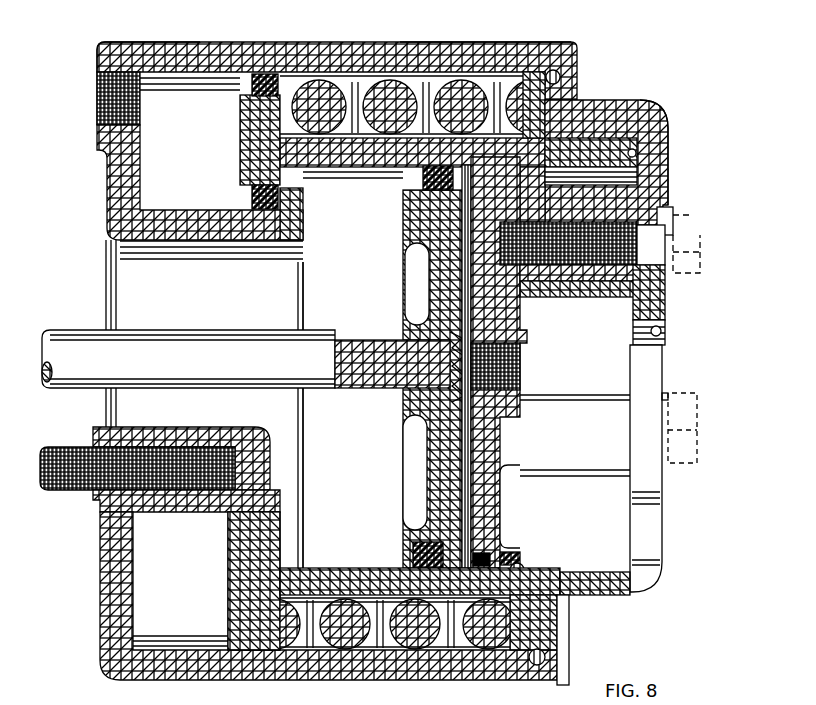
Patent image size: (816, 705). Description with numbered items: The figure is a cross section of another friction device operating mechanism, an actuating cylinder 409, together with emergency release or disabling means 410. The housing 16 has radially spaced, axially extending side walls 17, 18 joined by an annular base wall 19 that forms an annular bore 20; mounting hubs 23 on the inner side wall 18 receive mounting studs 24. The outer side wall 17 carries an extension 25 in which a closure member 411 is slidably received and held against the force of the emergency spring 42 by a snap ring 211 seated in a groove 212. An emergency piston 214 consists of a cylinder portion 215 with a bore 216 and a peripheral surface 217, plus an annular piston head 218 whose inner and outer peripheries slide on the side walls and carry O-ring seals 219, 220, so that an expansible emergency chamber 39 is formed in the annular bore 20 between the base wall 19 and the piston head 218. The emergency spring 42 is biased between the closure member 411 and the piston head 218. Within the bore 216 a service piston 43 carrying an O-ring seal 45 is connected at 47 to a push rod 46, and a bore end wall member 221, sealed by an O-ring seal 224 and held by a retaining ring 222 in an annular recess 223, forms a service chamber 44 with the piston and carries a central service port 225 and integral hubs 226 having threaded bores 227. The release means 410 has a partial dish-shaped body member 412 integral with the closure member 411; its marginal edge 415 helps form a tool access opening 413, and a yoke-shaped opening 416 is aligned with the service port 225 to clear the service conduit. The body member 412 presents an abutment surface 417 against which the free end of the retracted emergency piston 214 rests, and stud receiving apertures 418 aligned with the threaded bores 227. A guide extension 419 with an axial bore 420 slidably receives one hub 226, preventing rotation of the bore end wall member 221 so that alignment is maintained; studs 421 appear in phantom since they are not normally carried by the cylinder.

The actuating cylinder 409 is at (95, 40).
The housing 16 is at (139, 44).
The side wall 17 is at (190, 52).
The side wall extension 25 is at (486, 60).
The closure member 411 is at (536, 74).
The body member 412 is at (612, 102).
The emergency release means 410 is at (725, 100).
The abutment surface 417 is at (636, 152).
The stud receiving apertures 418 is at (678, 222).
The studs 421 is at (702, 265).
The guide extension 419 is at (668, 300).
The bore 420 is at (594, 285).
The hubs 226 is at (560, 272).
The threaded bore 227 is at (568, 243).
The yoke-shaped opening 416 is at (664, 331).
The access opening 413 is at (740, 378).
The O-ring seal 219 is at (253, 92).
The piston head 218 is at (252, 143).
The base wall 19 is at (114, 170).
The annular bore 20 is at (170, 210).
The side wall 18 is at (222, 240).
The O-ring seal 220 is at (296, 200).
The O-ring seal 45 is at (416, 183).
The emergency spring 42 is at (399, 114).
The service piston 43 is at (414, 297).
The push rod 46 is at (222, 369).
The connection 47 is at (432, 366).
The service port 225 is at (526, 384).
The mounting studs 24 is at (58, 447).
The mounting hubs 23 is at (176, 428).
The emergency piston 214 is at (364, 466).
The bore end wall member 221 is at (488, 445).
The service chamber 44 is at (466, 482).
The O-ring seal 224 is at (512, 535).
The retaining ring 222 is at (522, 560).
The annular recess 223 is at (521, 573).
The marginal edge 415 is at (648, 536).
The bore 216 is at (341, 568).
The cylinder portion 215 is at (402, 580).
The emergency chamber 39 is at (190, 587).
The peripheral surface 217 is at (603, 596).
The snap ring 211 is at (548, 652).
The groove 212 is at (537, 672).